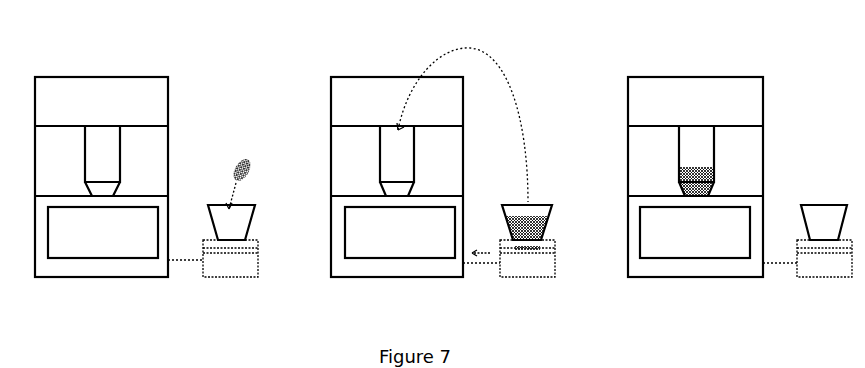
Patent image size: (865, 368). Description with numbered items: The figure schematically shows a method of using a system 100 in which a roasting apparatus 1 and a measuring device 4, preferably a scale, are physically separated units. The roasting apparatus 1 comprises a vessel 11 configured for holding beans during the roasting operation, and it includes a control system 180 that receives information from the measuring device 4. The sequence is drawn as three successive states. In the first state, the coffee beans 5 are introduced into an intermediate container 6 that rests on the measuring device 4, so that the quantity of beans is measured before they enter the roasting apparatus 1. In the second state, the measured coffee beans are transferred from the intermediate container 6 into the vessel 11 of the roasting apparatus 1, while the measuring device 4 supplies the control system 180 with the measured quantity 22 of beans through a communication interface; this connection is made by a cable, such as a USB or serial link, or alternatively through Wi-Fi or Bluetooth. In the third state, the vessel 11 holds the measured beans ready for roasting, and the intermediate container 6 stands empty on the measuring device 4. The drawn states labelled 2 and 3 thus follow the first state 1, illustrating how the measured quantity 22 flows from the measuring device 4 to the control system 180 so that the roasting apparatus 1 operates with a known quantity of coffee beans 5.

The system 100 is at (127, 54).
The roasting apparatus 1 is at (92, 171).
The machine in second state 2 is at (397, 201).
The machine in third state 3 is at (695, 205).
The vessel 11 is at (85, 178).
The control system 180 is at (70, 259).
The coffee beans 5 is at (250, 157).
The intermediate container 6 is at (256, 205).
The measuring device 4 is at (259, 240).
The measured quantity input 22 is at (185, 263).